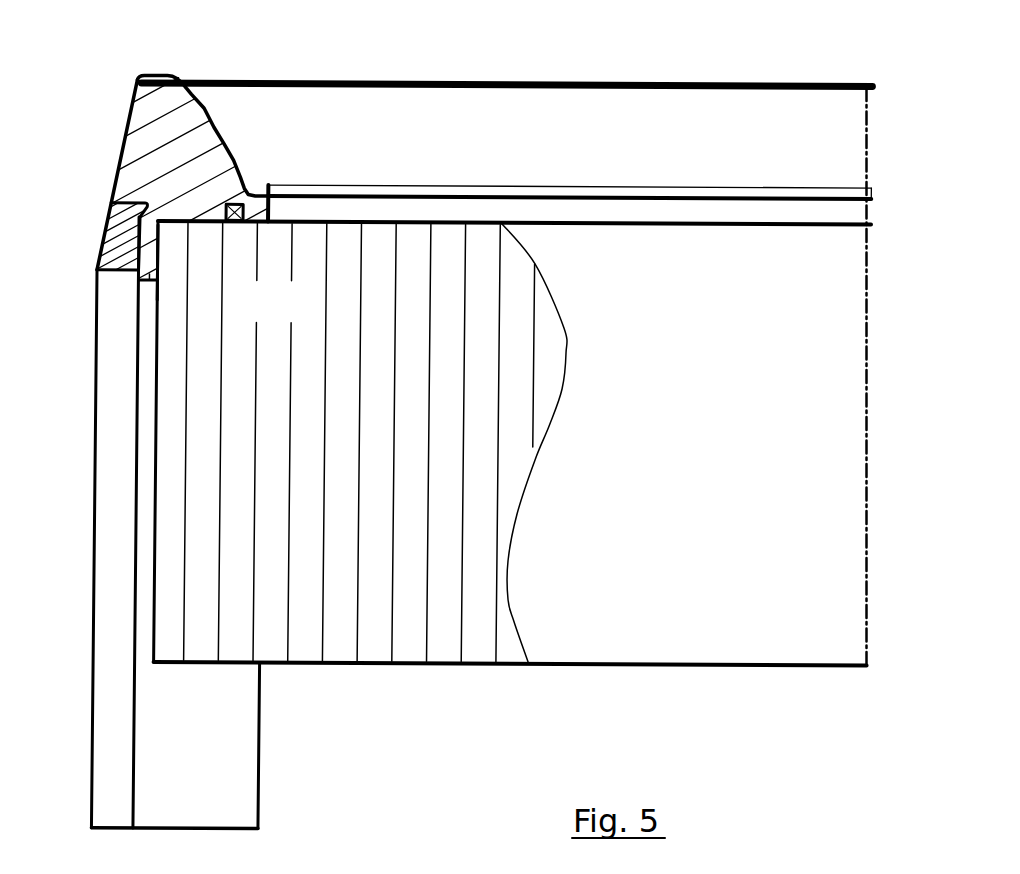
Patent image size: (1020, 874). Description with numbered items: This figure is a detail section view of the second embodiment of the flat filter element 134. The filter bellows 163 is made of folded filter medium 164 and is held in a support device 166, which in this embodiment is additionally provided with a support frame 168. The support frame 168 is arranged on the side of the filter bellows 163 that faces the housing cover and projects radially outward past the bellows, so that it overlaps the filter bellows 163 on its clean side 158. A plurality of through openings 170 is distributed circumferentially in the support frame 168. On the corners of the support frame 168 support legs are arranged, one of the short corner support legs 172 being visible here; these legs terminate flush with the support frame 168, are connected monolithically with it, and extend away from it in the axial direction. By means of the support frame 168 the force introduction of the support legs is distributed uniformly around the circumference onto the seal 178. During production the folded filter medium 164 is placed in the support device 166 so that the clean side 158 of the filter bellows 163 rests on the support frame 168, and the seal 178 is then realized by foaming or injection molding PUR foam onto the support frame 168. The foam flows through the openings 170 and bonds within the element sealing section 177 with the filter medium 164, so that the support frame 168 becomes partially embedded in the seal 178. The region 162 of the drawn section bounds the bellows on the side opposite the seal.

The flat filter element 134 is at (868, 87).
The clean side 158 is at (637, 222).
The bottom wall 162 is at (633, 666).
The filter bellows 163 is at (813, 630).
The filter medium 164 is at (710, 438).
The support device 166 is at (261, 720).
The support frame 168 is at (104, 244).
The through openings 170 is at (270, 196).
The corner support leg 172 is at (232, 790).
The element sealing section 177 is at (171, 238).
The seal 178 is at (150, 134).